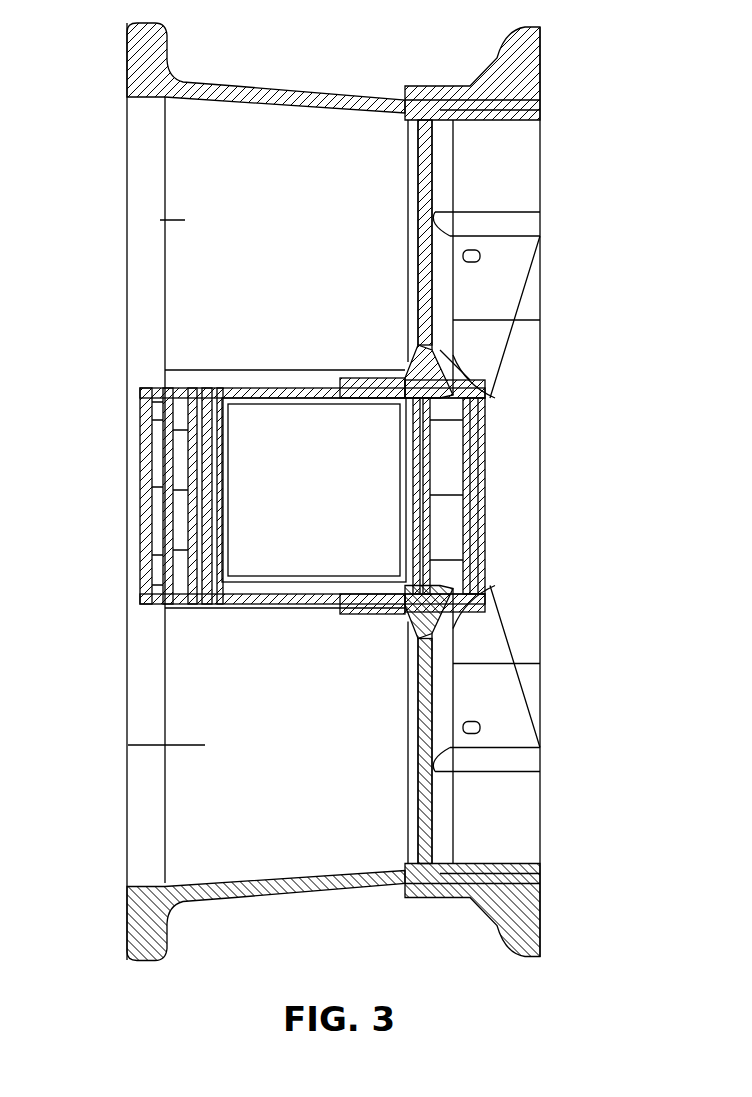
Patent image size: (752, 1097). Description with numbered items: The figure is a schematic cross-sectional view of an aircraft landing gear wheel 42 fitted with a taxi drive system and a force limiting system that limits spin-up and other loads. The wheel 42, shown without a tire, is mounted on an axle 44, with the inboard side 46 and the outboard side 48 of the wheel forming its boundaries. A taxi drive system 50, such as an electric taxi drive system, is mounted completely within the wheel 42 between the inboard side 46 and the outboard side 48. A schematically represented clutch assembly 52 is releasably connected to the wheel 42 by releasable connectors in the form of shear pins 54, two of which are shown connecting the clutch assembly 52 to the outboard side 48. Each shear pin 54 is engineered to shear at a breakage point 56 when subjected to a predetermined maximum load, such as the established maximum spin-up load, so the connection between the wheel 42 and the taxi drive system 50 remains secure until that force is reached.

The aircraft landing gear wheel 42 is at (333, 492).
The axle 44 is at (335, 482).
The inboard side of the wheel 46 is at (122, 333).
The outboard side of the wheel 48 is at (470, 360).
The taxi drive system 50 is at (160, 220).
The clutch assembly 52 is at (160, 382).
The shear pins 54 is at (485, 424).
The breakage point 56 is at (350, 378).